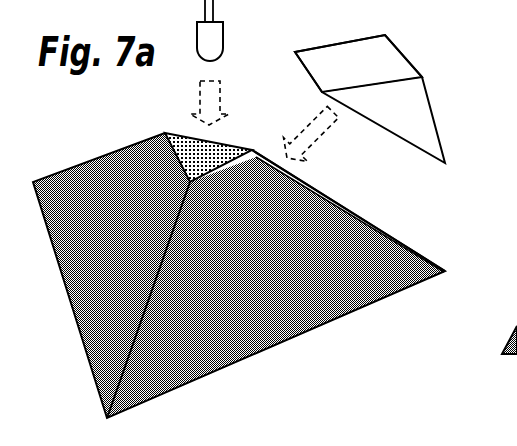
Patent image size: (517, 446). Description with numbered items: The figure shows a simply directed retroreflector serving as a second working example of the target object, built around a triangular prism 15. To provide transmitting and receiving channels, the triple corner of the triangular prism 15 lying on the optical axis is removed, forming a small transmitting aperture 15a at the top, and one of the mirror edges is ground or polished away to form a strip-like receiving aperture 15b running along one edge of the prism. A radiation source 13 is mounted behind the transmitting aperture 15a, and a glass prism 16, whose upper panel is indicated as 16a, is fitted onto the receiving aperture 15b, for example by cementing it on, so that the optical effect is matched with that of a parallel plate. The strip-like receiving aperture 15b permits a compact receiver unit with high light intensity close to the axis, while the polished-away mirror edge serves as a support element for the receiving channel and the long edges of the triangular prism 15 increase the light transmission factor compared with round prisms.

The radiation source 13 is at (261, 30).
The triangular prism 15 is at (239, 275).
The transmitting aperture 15a is at (156, 139).
The receiving aperture 15b is at (348, 211).
The glass prism 16 is at (406, 99).
The upper panel of folded sheet 16a is at (402, 50).